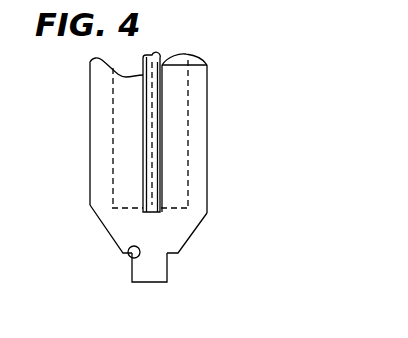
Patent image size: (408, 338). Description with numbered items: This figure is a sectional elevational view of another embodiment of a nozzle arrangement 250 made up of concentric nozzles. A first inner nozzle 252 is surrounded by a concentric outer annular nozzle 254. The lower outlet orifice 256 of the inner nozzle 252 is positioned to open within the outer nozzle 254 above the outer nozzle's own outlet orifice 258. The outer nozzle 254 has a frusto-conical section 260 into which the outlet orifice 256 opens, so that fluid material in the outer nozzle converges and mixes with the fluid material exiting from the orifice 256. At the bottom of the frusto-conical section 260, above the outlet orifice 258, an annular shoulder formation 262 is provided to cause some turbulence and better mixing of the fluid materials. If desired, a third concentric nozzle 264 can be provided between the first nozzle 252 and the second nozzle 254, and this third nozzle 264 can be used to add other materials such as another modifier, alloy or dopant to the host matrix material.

The nozzle arrangement 250 is at (165, 180).
The first inner nozzle 252 is at (162, 182).
The concentric outer annular nozzle 254 is at (207, 148).
The lower outlet orifice 256 is at (162, 214).
The outlet orifice 258 is at (162, 283).
The frusto-conical section 260 is at (107, 231).
The annular shoulder formation 262 is at (132, 254).
The third concentric nozzle 264 is at (115, 155).